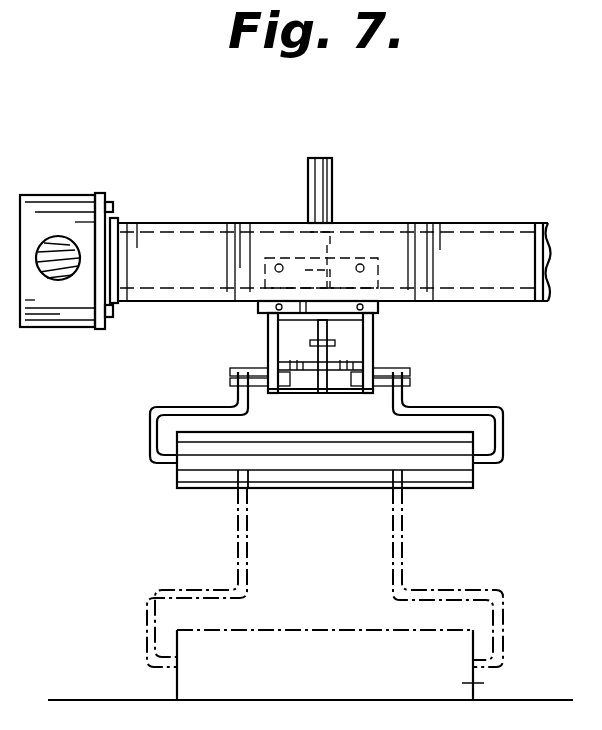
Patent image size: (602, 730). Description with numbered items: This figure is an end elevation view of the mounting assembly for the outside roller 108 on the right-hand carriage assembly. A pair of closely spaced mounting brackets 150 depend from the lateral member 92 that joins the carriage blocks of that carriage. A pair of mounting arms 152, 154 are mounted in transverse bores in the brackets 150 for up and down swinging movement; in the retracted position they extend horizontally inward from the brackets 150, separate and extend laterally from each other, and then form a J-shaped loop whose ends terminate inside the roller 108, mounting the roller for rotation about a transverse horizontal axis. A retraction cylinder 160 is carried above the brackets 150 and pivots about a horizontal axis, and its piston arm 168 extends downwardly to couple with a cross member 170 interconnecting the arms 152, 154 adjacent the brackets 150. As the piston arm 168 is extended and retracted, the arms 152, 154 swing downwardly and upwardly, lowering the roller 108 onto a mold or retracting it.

The lateral member 92 is at (183, 228).
The retraction cylinder 160 is at (333, 167).
The piston arm 168 is at (378, 321).
The mounting brackets 150 is at (268, 332).
The cross member 170 is at (335, 393).
The outside roller 108 is at (341, 478).
The mounting arm 152 is at (150, 432).
The mounting arm 154 is at (503, 440).